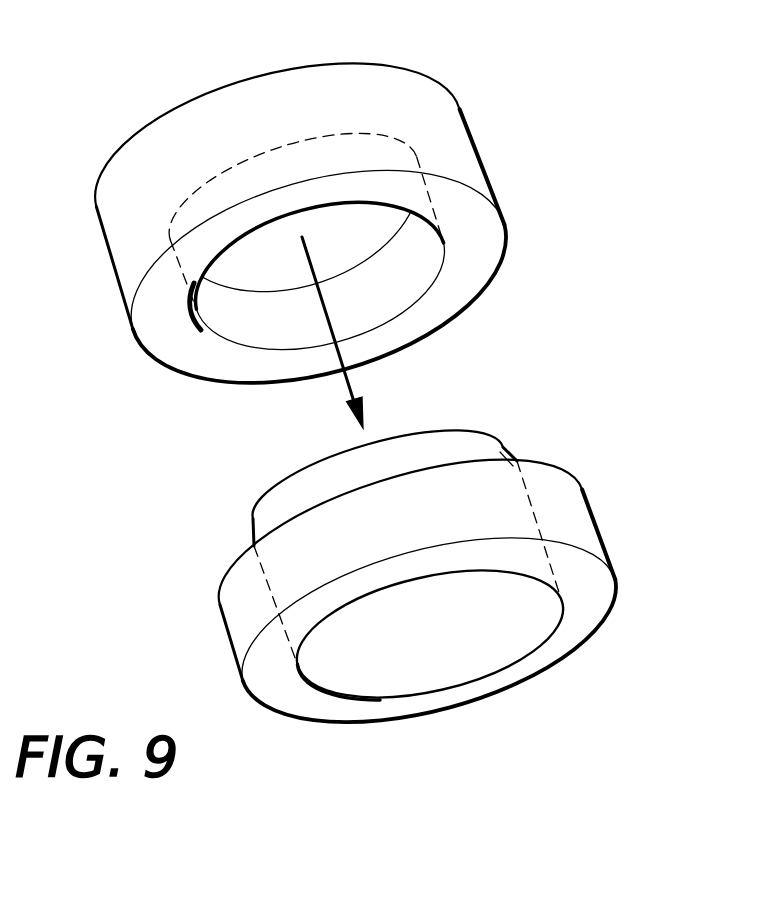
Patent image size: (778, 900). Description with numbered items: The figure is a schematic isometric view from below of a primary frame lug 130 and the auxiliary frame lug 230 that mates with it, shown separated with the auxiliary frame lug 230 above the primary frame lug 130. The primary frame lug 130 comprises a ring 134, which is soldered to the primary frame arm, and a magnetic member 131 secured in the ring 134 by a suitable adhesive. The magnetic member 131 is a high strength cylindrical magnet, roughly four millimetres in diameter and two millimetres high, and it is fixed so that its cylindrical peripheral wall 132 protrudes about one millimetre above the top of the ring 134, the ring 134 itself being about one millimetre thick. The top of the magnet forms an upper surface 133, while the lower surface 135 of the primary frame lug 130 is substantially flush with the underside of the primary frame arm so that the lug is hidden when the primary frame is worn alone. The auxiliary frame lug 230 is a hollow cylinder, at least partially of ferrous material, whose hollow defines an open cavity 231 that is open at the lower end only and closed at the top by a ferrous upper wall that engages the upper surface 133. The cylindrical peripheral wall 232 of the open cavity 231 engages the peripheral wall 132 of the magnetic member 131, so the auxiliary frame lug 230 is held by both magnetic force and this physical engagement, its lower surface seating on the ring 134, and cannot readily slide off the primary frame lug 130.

The auxiliary frame lug 230 is at (353, 238).
The open cavity 231 is at (228, 325).
The peripheral wall 232 is at (418, 270).
The primary frame lug 130 is at (372, 581).
The magnetic member 131 is at (468, 663).
The peripheral wall 132 is at (460, 448).
The upper surface 133 is at (339, 460).
The ring 134 is at (583, 532).
The lower surface 135 is at (356, 712).